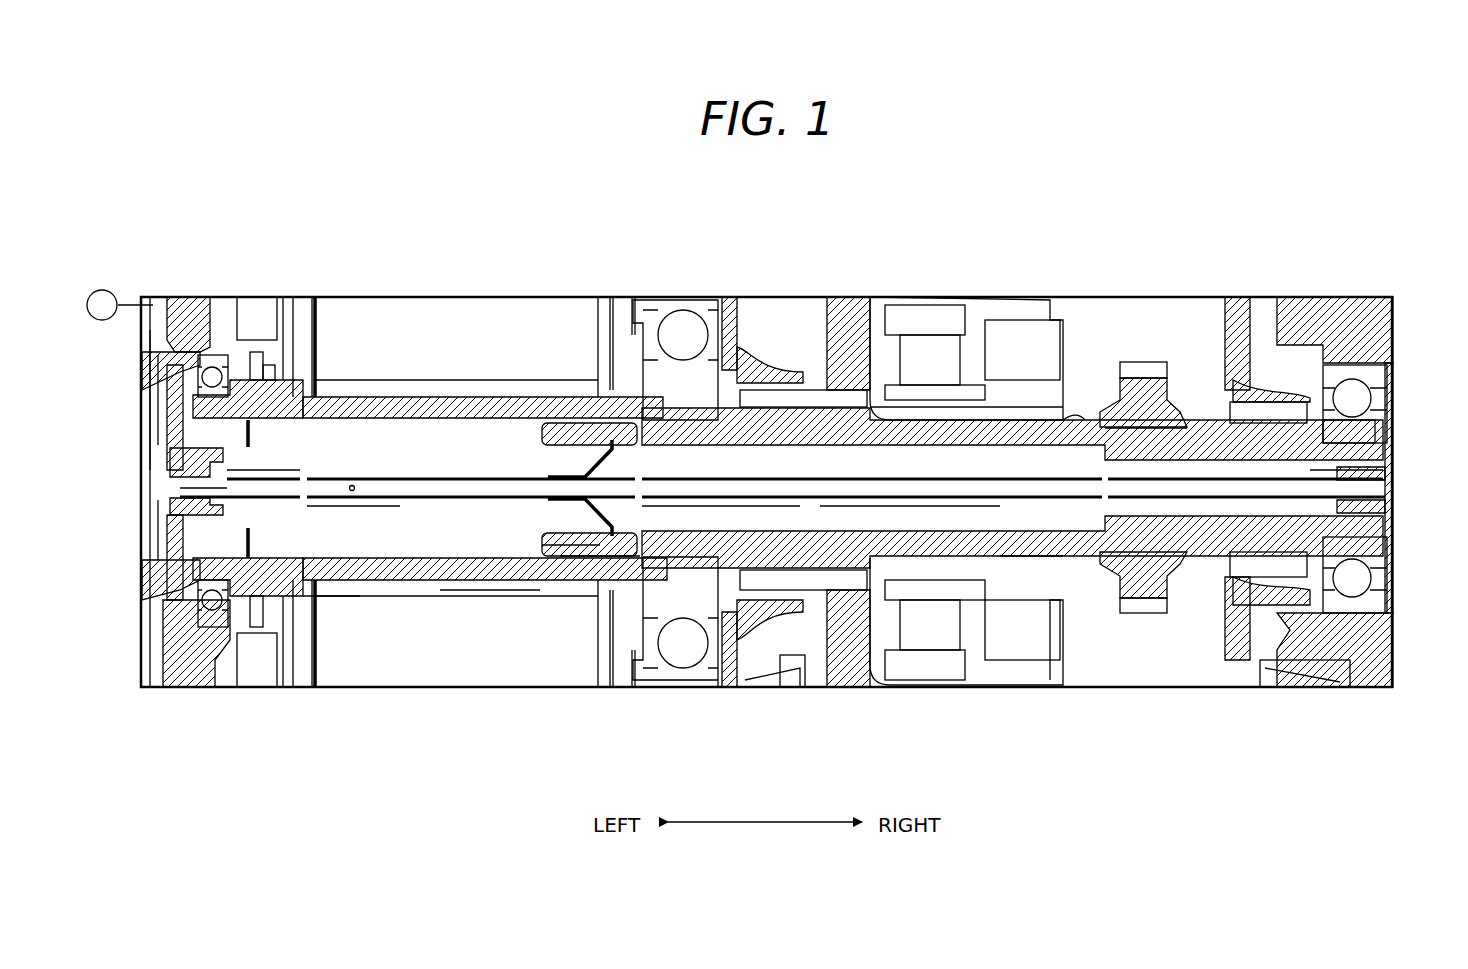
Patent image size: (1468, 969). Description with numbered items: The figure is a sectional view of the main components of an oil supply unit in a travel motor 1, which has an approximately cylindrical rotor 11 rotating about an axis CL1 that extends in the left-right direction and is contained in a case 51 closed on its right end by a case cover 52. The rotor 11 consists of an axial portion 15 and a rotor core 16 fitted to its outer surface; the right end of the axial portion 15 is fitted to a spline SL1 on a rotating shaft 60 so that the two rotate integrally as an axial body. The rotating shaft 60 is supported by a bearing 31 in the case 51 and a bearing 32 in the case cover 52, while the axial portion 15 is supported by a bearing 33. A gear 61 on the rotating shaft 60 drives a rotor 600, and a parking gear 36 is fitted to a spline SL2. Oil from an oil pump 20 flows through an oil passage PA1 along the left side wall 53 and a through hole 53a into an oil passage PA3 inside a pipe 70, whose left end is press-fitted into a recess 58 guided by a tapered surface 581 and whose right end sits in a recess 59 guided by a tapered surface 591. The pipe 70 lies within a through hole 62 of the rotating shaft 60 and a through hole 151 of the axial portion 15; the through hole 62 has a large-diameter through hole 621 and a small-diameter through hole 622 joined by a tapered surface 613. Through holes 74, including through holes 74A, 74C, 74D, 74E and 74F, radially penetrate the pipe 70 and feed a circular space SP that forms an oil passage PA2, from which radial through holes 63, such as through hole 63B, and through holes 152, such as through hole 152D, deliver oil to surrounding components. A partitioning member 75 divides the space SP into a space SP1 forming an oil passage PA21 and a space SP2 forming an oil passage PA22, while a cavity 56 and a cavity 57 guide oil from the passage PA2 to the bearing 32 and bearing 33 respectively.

The travel motor 1 is at (378, 296).
The rotor 11 is at (336, 296).
The axial portion 15 is at (515, 405).
The rotor core 16 is at (402, 340).
The oil pump 20 is at (105, 291).
The bearing 31 is at (683, 325).
The bearing 32 is at (1353, 385).
The bearing 33 is at (215, 362).
The parking gear 36 is at (1150, 420).
The case 51 is at (203, 687).
The case cover 52 is at (1378, 328).
The left side wall 53 is at (170, 462).
The through hole 53a is at (168, 506).
The cavity (communication passage) 56 is at (1382, 427).
The cavity (communication passage) 57 is at (165, 392).
The recess 58 is at (175, 528).
The recess 59 is at (1367, 479).
The rotating shaft 60 is at (1054, 412).
The gear 61 is at (762, 392).
The through hole 62 is at (972, 446).
The through holes 63 is at (607, 420).
The through hole 63B is at (1093, 560).
The pipe 70 is at (478, 470).
The through holes 74 is at (1108, 478).
The through hole 74A is at (640, 496).
The through hole 74C is at (307, 502).
The through hole 74D is at (355, 491).
The through hole 74E is at (1322, 500).
The through hole 74F is at (227, 474).
The partitioning member 75 is at (565, 518).
The through hole 151 is at (440, 582).
The through holes 152 is at (283, 378).
The through hole 152D is at (347, 596).
The tapered surface 581 is at (225, 496).
The tapered surface 591 is at (1277, 530).
The rotor 600 is at (836, 345).
The tapered surface 613 is at (1072, 432).
The large-diameter through hole 621 is at (808, 660).
The small-diameter through hole 622 is at (1150, 680).
The axis CL1 is at (1408, 488).
The oil passage PA1 is at (162, 414).
The oil passage PA2 is at (530, 558).
The oil passage PA21 is at (1016, 518).
The oil passage PA22 is at (493, 582).
The oil passage PA3 is at (860, 492).
The spline SL1 is at (587, 556).
The spline SL2 is at (1141, 410).
The circular space SP is at (412, 552).
The space SP1 is at (366, 438).
The space SP2 is at (984, 458).